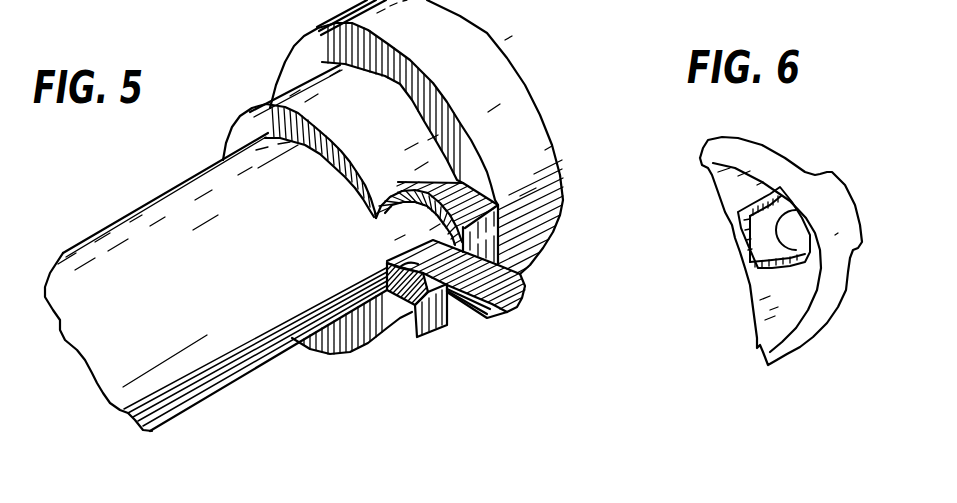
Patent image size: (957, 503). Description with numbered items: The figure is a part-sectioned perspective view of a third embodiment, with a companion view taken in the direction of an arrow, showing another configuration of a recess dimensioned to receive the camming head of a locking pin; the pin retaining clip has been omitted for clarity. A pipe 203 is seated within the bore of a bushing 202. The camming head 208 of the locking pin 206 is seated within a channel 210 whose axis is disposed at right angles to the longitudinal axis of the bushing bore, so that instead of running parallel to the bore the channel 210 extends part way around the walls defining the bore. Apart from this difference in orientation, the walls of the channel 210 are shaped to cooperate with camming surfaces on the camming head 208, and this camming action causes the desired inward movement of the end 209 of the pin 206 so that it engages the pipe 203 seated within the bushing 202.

In FIG. 5, the bushing 202 is at (308, 98).
In FIG. 5, the pipe 203 is at (188, 356).
In FIG. 5, the locking pin 206 is at (485, 293).
In FIG. 5, the camming head 208 is at (387, 263).
In FIG. 5, the end of the pin 209 is at (402, 258).
In FIG. 5, the channel 210 is at (408, 272).
In FIG. 6, the channel 210 is at (785, 194).